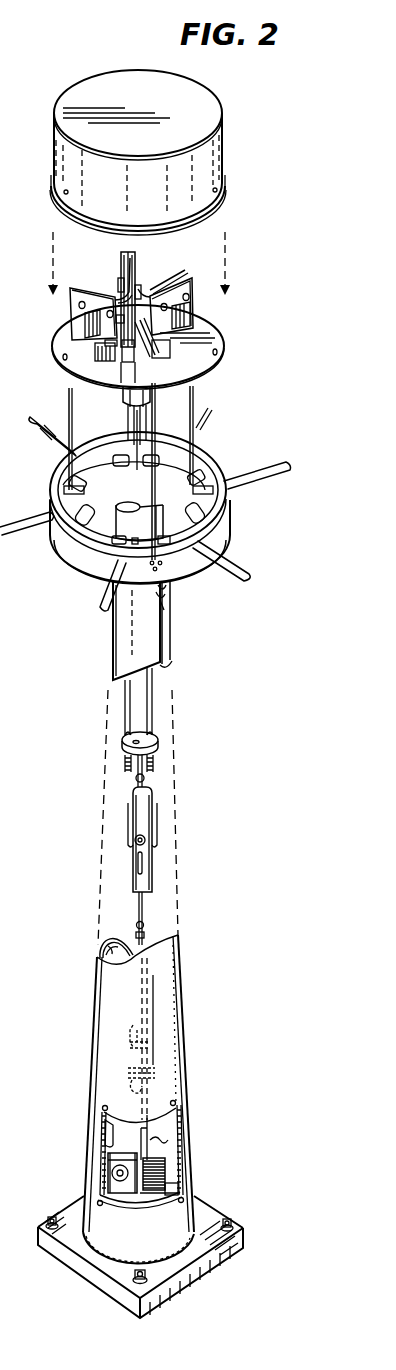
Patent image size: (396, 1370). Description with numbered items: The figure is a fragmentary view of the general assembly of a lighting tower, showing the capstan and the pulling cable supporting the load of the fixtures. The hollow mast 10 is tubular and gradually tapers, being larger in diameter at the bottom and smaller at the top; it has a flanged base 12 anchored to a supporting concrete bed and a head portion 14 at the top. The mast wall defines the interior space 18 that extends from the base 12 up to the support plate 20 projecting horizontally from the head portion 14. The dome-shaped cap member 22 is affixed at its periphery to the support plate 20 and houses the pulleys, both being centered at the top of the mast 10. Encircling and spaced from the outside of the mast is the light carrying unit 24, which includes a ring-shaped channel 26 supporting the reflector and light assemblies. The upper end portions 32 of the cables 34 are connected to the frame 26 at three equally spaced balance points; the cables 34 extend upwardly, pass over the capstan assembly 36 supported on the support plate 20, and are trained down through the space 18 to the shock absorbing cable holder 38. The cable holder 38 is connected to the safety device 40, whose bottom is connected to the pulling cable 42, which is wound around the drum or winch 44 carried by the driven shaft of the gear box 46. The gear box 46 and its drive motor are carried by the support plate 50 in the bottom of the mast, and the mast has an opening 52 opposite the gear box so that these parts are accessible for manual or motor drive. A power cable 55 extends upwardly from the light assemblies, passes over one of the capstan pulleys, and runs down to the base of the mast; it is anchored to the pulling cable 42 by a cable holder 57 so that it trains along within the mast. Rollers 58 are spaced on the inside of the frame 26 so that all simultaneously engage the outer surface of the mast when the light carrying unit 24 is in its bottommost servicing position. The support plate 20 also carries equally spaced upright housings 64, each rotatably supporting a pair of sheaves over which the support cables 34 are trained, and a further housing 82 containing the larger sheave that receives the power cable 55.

The hollow mast 10 is at (95, 992).
The flanged base 12 is at (84, 1279).
The head portion 14 is at (123, 399).
The interior space 18 is at (105, 936).
The support plate 20 is at (225, 335).
The dome-shaped enclosure or cap member 22 is at (222, 107).
The light carrying unit 24 is at (228, 538).
The ring-shaped channel 26 is at (92, 552).
The upper end portions of the cables 32 is at (195, 424).
The cables 34 is at (128, 695).
The capstan assembly 36 is at (185, 268).
The shock absorbing cable holder 38 is at (163, 740).
The safety device 40 is at (153, 877).
The pulling cable 42 is at (149, 1140).
The drum or winch 44 is at (163, 1153).
The gear box 46 is at (120, 1153).
The support plate 50 is at (170, 1192).
The opening 52 is at (103, 1133).
The power cable 55 is at (130, 1042).
The cable holder 57 is at (125, 1073).
The rollers 58 is at (224, 508).
The upright housings 64 is at (72, 312).
The housing 82 is at (135, 262).